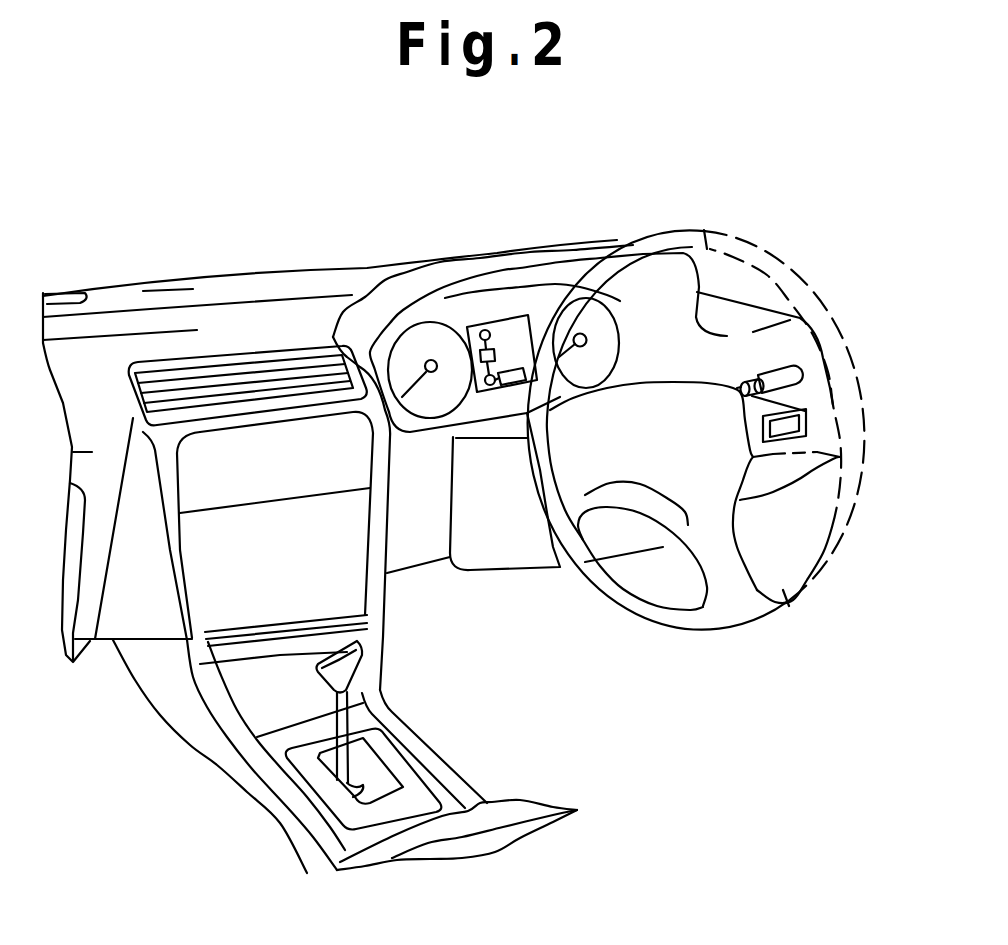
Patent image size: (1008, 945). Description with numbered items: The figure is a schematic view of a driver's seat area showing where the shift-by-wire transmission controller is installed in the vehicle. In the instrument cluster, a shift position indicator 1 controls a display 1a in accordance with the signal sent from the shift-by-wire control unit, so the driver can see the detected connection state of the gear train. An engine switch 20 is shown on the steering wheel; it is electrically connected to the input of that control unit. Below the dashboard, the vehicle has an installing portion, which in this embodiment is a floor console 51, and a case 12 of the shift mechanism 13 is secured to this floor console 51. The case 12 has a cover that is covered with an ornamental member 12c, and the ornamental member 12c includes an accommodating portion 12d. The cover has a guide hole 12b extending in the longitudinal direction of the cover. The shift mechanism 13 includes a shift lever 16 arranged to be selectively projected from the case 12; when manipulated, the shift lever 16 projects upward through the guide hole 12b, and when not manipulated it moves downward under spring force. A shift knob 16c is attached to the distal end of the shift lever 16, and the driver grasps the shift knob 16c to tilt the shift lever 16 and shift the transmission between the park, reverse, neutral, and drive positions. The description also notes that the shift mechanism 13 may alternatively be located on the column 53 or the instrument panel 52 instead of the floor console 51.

The shift position indicator 1 is at (507, 322).
The display 1a is at (513, 322).
The case 12 is at (400, 828).
The guide hole 12b is at (327, 837).
The ornamental member 12c is at (238, 748).
The accommodating portion 12d is at (360, 763).
The shift mechanism 13 is at (430, 780).
The shift lever 16 is at (377, 713).
The shift knob 16c is at (355, 658).
The engine switch 20 is at (806, 412).
The floor console 51 is at (300, 795).
The instrument panel 52 is at (200, 573).
The column 53 is at (498, 562).